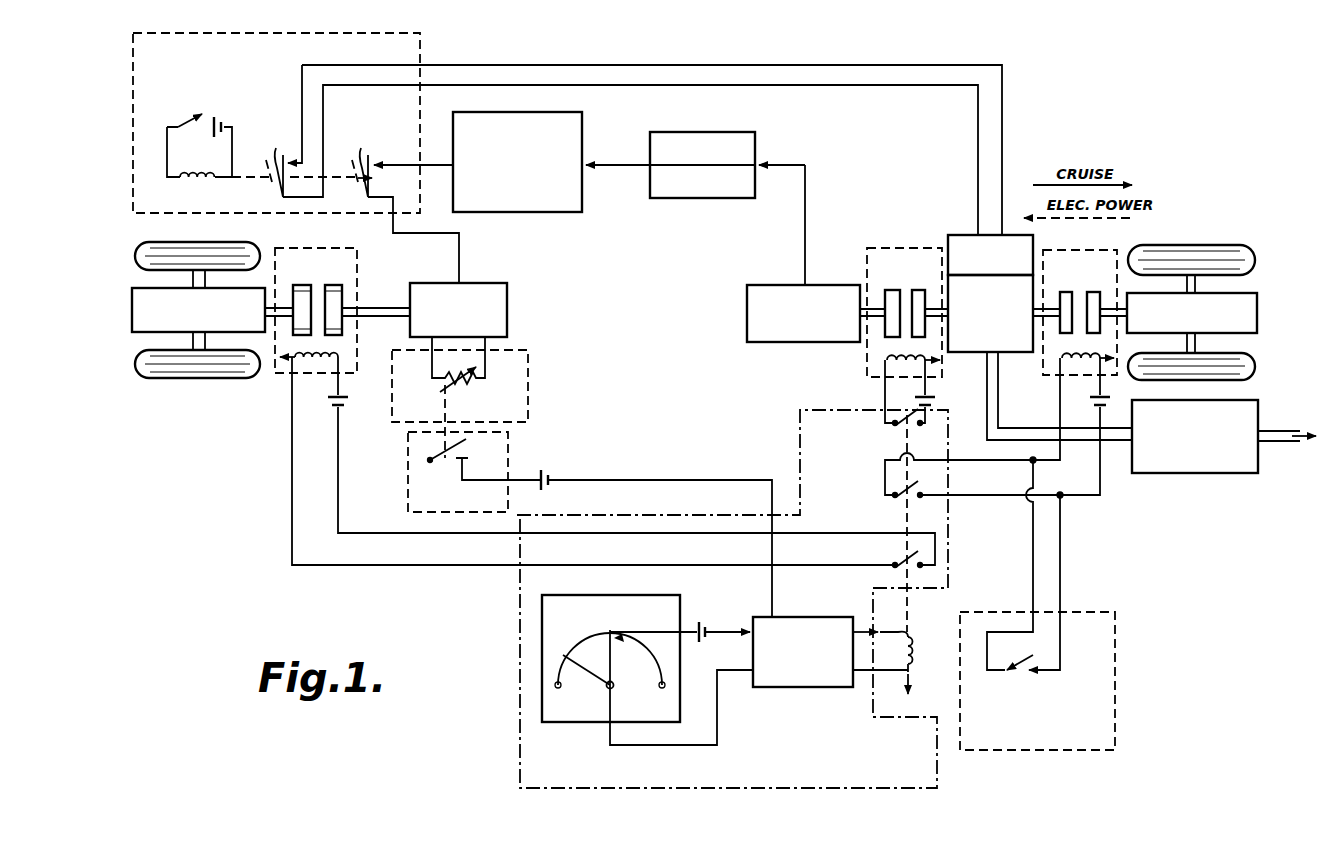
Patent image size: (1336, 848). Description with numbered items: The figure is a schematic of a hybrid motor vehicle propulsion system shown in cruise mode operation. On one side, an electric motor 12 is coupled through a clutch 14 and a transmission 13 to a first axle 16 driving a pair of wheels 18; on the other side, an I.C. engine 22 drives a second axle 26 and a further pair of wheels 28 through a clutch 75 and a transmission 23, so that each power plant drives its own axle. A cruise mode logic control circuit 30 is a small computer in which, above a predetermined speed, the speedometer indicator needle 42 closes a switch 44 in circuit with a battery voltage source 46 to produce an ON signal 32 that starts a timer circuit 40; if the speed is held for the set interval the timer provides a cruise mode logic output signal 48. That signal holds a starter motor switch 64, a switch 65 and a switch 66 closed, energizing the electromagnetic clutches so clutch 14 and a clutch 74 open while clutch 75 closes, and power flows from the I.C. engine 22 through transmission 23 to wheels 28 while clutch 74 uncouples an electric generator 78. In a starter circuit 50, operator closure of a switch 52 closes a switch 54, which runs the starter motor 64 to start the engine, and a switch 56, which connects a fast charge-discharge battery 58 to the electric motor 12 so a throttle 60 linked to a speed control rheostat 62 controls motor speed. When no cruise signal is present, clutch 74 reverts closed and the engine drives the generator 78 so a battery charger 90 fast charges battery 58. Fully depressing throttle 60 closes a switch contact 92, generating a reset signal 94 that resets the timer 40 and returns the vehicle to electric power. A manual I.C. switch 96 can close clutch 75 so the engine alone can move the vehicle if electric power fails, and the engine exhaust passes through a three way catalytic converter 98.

The electric motor 12 is at (490, 283).
The transmission 13 is at (132, 303).
The clutch 14 is at (358, 270).
The first axle 16 is at (192, 340).
The wheels 18 is at (136, 250).
The I.C. engine 22 is at (975, 353).
The transmission 23 is at (1257, 305).
The second axle 26 is at (1200, 285).
The wheels 28 is at (1225, 245).
The cruise mode logic control circuit 30 is at (517, 623).
The ON signal 32 is at (724, 626).
The timer circuit 40 is at (800, 688).
The speedometer indicator needle 42 is at (616, 690).
The switch 44 is at (621, 642).
The battery voltage source 46 is at (703, 620).
The cruise mode logic output signal 48 is at (912, 626).
The starter circuit 50 is at (276, 123).
The switch 52 is at (203, 113).
The switch 54 is at (629, 150).
The switch 56 is at (374, 197).
The fast charge-discharge battery 58 is at (586, 126).
The throttle 60 is at (508, 442).
The speed control rheostat 62 is at (528, 362).
The starter motor 64 is at (960, 234).
The switch 65 is at (885, 491).
The switch 66 is at (893, 563).
The clutch 74 is at (867, 362).
The clutch 75 is at (1046, 378).
The electric generator 78 is at (747, 330).
The battery charger 90 is at (757, 138).
The switch contact 92 is at (467, 461).
The reset signal 94 is at (656, 540).
The manual I.C. switch 96 is at (1115, 623).
The 3-way catalytic converter 98 is at (1232, 474).